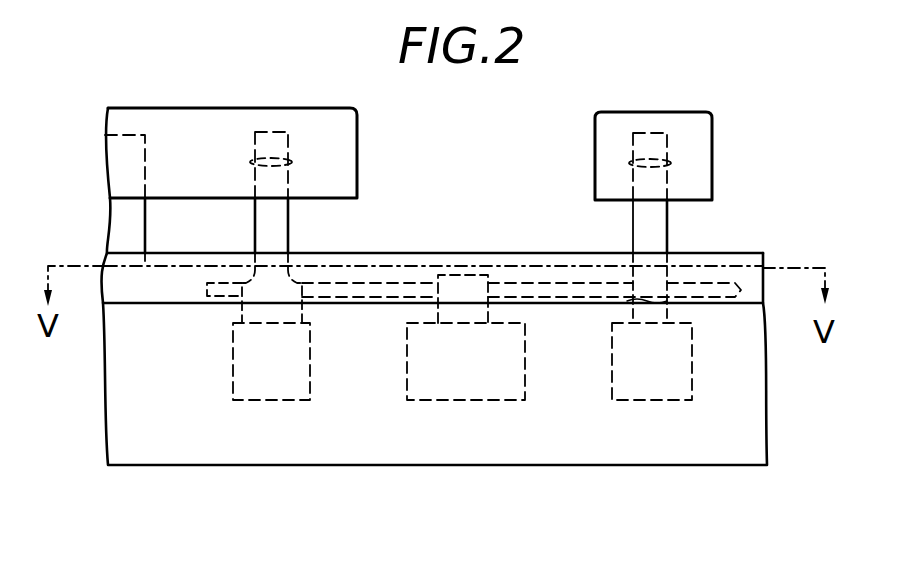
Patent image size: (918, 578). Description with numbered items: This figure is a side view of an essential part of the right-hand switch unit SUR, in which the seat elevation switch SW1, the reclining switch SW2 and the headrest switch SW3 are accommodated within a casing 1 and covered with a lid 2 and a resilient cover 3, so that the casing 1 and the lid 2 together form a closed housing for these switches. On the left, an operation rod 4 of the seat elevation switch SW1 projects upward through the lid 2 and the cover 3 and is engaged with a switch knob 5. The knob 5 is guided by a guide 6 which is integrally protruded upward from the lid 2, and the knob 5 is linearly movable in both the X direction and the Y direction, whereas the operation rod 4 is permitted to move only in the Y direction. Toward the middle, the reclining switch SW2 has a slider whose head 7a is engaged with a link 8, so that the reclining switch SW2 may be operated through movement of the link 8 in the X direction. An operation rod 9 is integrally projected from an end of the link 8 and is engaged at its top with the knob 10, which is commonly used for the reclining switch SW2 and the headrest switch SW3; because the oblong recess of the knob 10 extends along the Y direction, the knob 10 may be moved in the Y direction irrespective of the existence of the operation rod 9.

The casing 1 is at (757, 401).
The lid 2 is at (763, 295).
The resilient cover 3 is at (760, 253).
The operation rod 4 is at (288, 230).
The switch knob 5 is at (229, 109).
The guide 6 is at (128, 220).
The head 7a is at (465, 283).
The link 8 is at (545, 290).
The operation rod 9 is at (667, 232).
The knob 10 is at (712, 125).
The right-hand switch unit SUR is at (508, 175).
The seat elevation switch SW1 is at (290, 400).
The reclining switch SW2 is at (483, 400).
The headrest switch SW3 is at (660, 400).